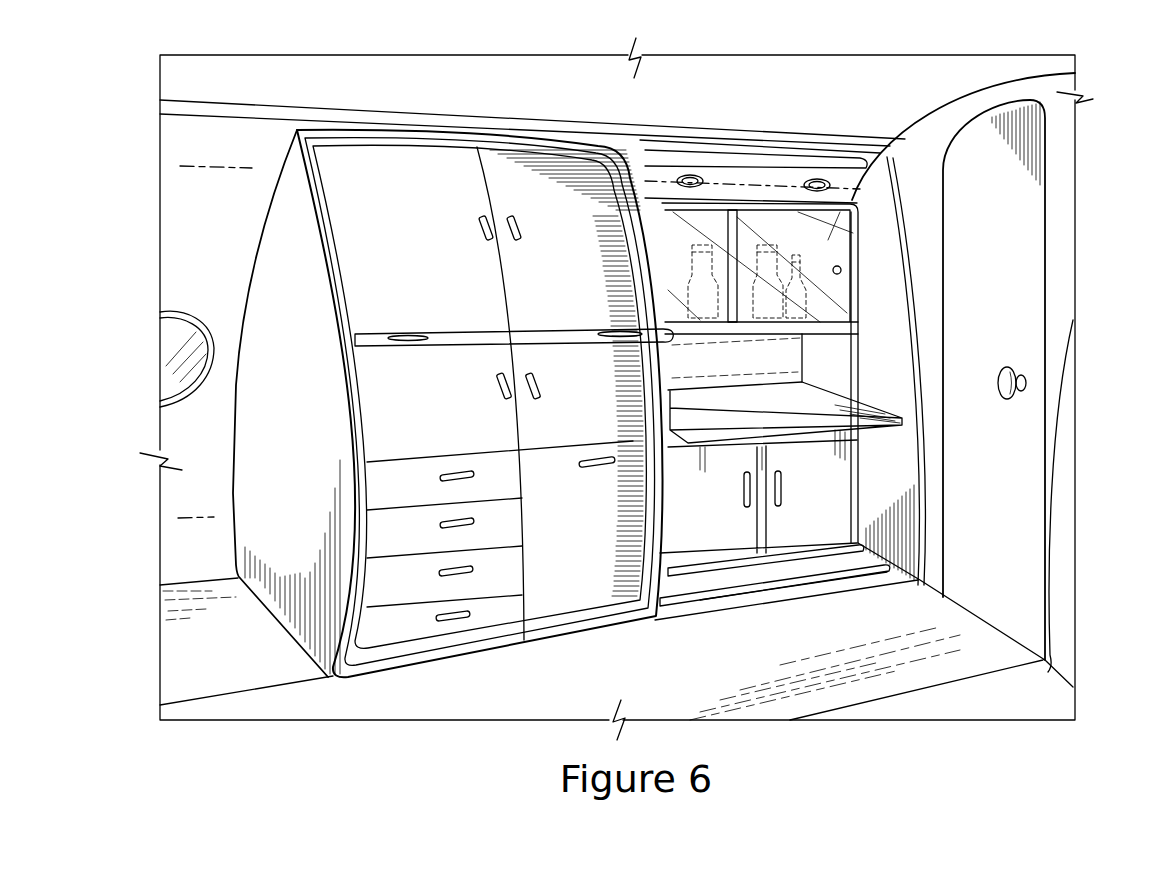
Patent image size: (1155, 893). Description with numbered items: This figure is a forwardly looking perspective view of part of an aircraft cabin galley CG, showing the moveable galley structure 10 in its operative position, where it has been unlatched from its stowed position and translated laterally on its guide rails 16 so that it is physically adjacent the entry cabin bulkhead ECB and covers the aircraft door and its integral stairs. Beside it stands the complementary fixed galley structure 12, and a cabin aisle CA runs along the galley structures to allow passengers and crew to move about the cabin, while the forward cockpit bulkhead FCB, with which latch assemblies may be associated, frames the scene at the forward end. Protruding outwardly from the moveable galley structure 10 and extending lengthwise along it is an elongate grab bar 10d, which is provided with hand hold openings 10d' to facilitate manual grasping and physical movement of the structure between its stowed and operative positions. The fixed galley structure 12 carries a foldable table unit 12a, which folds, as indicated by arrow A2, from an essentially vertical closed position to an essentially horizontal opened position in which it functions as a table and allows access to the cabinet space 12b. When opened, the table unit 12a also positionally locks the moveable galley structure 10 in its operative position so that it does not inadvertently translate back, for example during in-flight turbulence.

The moveable galley structure 10 is at (540, 204).
The grab bar 10d is at (514, 360).
The hand hold openings 10d' is at (515, 311).
The fixed galley structure 12 is at (751, 244).
The foldable table unit 12a is at (808, 413).
The cabinet space 12b is at (718, 370).
The guide rails 16 is at (780, 582).
The arrow A2 is at (890, 398).
The forward cockpit bulkhead FCB is at (880, 197).
The entry cabin bulkhead ECB is at (268, 409).
The cabin aisle CA is at (653, 672).
The cabin galley CG is at (1012, 494).